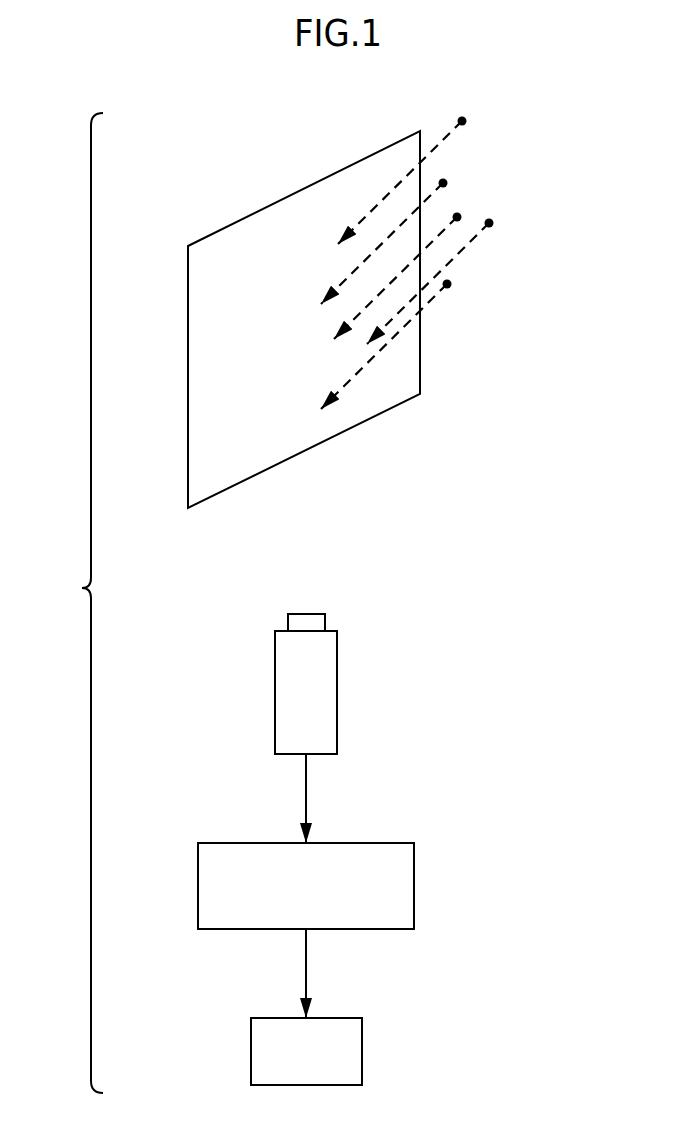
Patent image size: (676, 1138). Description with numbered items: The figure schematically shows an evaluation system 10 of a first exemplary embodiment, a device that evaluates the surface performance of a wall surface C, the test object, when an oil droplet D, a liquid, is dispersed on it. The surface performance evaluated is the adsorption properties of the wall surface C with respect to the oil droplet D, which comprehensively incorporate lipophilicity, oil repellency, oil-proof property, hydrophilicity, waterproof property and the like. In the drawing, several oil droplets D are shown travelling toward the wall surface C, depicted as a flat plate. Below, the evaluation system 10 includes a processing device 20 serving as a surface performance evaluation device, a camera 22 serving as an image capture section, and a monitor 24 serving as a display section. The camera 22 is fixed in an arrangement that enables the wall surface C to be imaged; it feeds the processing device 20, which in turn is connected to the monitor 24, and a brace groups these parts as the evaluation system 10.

The evaluation system 10 is at (73, 603).
The wall surface C is at (188, 272).
The oil droplet D is at (490, 222).
The camera 22 is at (275, 690).
The processing device 20 is at (270, 843).
The monitor 24 is at (272, 1018).